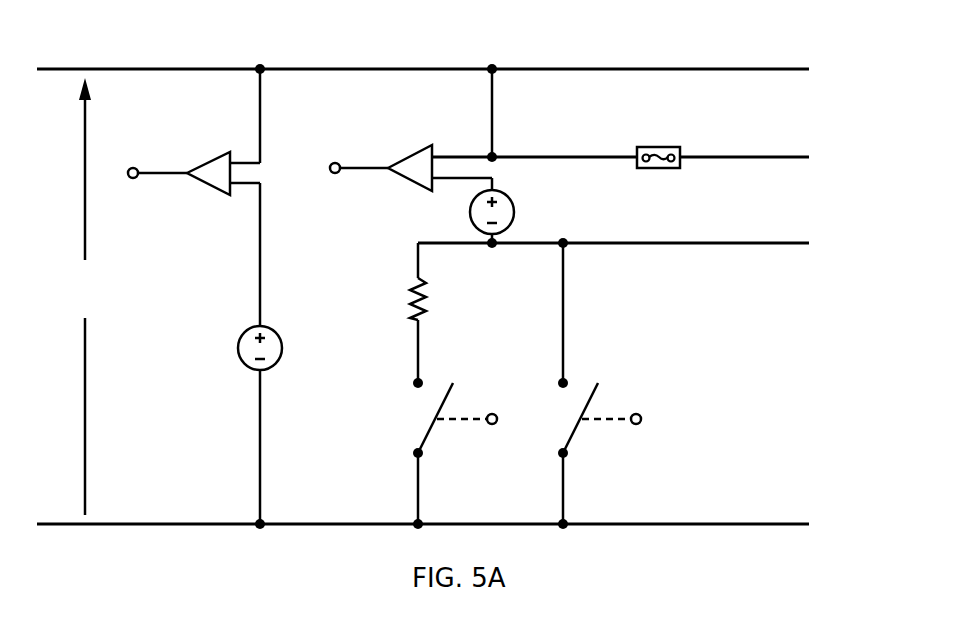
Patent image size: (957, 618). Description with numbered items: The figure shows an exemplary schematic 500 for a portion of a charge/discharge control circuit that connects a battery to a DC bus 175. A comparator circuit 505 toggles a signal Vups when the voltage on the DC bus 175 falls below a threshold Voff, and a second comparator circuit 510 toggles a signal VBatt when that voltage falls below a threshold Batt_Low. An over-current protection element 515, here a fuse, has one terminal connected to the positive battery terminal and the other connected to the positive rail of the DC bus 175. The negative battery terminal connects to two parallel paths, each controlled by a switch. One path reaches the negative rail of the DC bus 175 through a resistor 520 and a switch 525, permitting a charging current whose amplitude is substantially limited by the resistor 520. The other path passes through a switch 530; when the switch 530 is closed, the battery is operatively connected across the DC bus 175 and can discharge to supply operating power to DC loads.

The schematic 500 is at (691, 49).
The DC bus 175 is at (84, 200).
The comparator circuit 505 is at (210, 153).
The comparator circuit 510 is at (419, 146).
The over-current protection element 515 is at (663, 147).
The resistor 520 is at (408, 298).
The switch 525 is at (412, 415).
The switch 530 is at (560, 420).